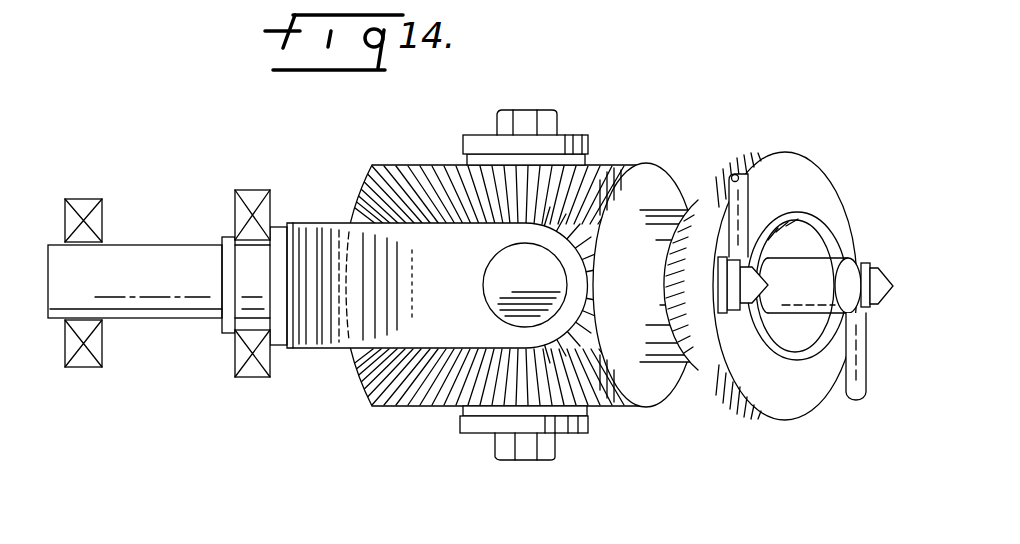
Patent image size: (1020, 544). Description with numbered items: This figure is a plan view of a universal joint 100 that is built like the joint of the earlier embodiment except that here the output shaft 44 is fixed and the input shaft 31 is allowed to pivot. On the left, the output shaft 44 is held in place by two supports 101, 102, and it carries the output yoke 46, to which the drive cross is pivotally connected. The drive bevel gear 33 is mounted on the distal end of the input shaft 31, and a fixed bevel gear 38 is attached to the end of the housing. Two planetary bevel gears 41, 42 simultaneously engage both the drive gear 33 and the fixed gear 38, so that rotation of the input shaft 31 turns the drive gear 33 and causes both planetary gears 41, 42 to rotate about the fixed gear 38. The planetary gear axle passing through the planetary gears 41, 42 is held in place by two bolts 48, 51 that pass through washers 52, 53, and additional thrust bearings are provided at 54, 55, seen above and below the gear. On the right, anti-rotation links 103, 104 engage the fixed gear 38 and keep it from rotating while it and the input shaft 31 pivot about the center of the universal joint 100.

The universal joint 100 is at (664, 112).
The input shaft 31 is at (847, 258).
The drive bevel gear 33 is at (356, 206).
The fixed bevel gear 38 is at (678, 184).
The planetary bevel gear 41 is at (397, 163).
The planetary bevel gear 42 is at (437, 407).
The output shaft 44 is at (138, 244).
The output yoke 46 is at (370, 337).
The bolt 48 is at (535, 110).
The bolt 51 is at (543, 461).
The washer 52 is at (482, 135).
The washer 53 is at (588, 431).
The thrust bearing 54 is at (465, 163).
The thrust bearing 55 is at (588, 410).
The support 101 is at (263, 190).
The support 102 is at (85, 197).
The anti-rotation link 103 is at (840, 398).
The anti-rotation link 104 is at (745, 177).